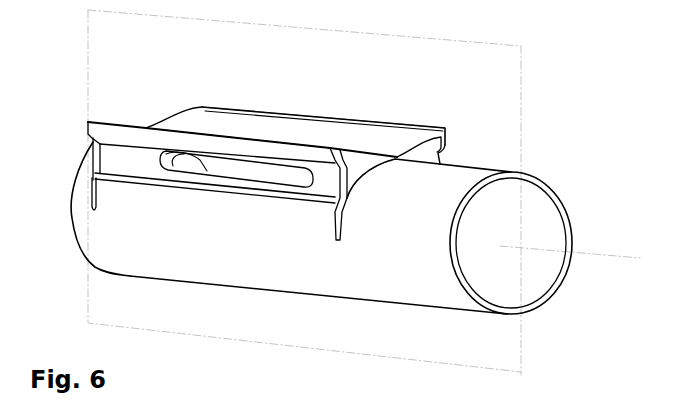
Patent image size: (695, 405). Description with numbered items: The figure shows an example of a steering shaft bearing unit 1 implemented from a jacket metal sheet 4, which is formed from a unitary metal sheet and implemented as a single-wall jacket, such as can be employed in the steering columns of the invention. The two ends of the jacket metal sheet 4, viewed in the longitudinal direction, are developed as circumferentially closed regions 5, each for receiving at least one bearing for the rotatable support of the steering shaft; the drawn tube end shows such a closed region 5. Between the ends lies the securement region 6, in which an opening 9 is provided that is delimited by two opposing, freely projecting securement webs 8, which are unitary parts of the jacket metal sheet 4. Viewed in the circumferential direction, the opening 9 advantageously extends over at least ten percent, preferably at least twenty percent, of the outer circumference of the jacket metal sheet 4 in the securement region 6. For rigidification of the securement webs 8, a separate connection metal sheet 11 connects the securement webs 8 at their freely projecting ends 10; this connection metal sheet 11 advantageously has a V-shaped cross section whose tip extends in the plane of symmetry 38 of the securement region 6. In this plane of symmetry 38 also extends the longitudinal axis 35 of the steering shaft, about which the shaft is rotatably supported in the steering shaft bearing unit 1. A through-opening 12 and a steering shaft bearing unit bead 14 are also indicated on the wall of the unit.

The steering shaft bearing unit 1 is at (522, 165).
The jacket metal sheet 4 is at (343, 275).
The circumferentially closed region 5 is at (413, 282).
The securement region 6 is at (271, 203).
The securement web 8 is at (131, 138).
The opening 9 is at (345, 184).
The freely projecting end 10 is at (183, 134).
The connection metal sheet 11 is at (287, 132).
The through-opening 12 is at (220, 185).
The steering shaft bearing unit bead 14 is at (145, 160).
The longitudinal axis 35 is at (595, 248).
The plane of symmetry 38 is at (497, 348).